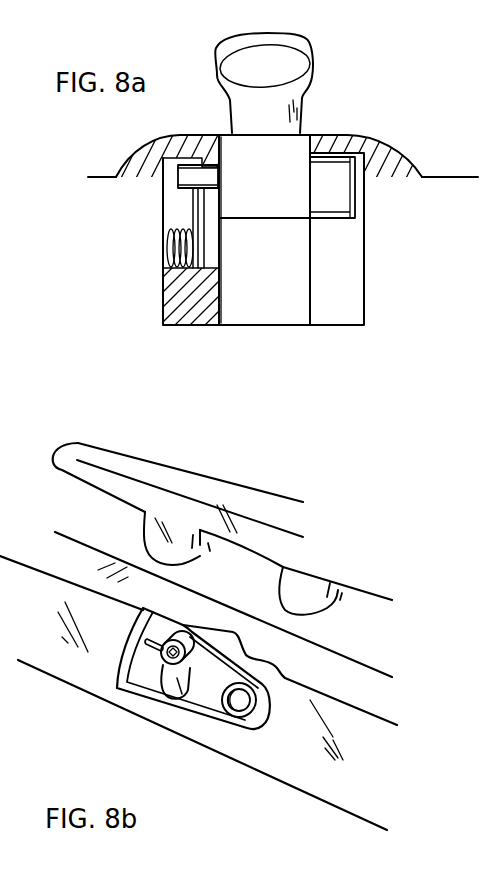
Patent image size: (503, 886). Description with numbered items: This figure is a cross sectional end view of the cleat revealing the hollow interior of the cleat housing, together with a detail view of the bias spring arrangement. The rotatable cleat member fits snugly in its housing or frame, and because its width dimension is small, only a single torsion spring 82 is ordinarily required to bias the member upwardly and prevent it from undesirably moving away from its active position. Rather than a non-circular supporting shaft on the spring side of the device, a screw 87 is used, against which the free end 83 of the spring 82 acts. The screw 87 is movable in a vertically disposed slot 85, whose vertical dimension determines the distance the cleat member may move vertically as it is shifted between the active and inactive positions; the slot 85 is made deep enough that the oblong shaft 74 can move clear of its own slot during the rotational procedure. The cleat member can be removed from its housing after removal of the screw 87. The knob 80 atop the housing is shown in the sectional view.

In FIG. 8A, the knob 80 is at (311, 58).
In FIG. 8A, the screw 87 is at (178, 176).
In FIG. 8B, the screw 87 is at (128, 690).
In FIG. 8A, the vertically disposed slot 85 is at (177, 215).
In FIG. 8B, the vertically disposed slot 85 is at (166, 658).
In FIG. 8A, the torsion spring 82 is at (172, 253).
In FIG. 8B, the torsion spring 82 is at (233, 717).
In FIG. 8A, the oblong shaft 74 is at (345, 192).
In FIG. 8B, the free end 83 is at (207, 667).